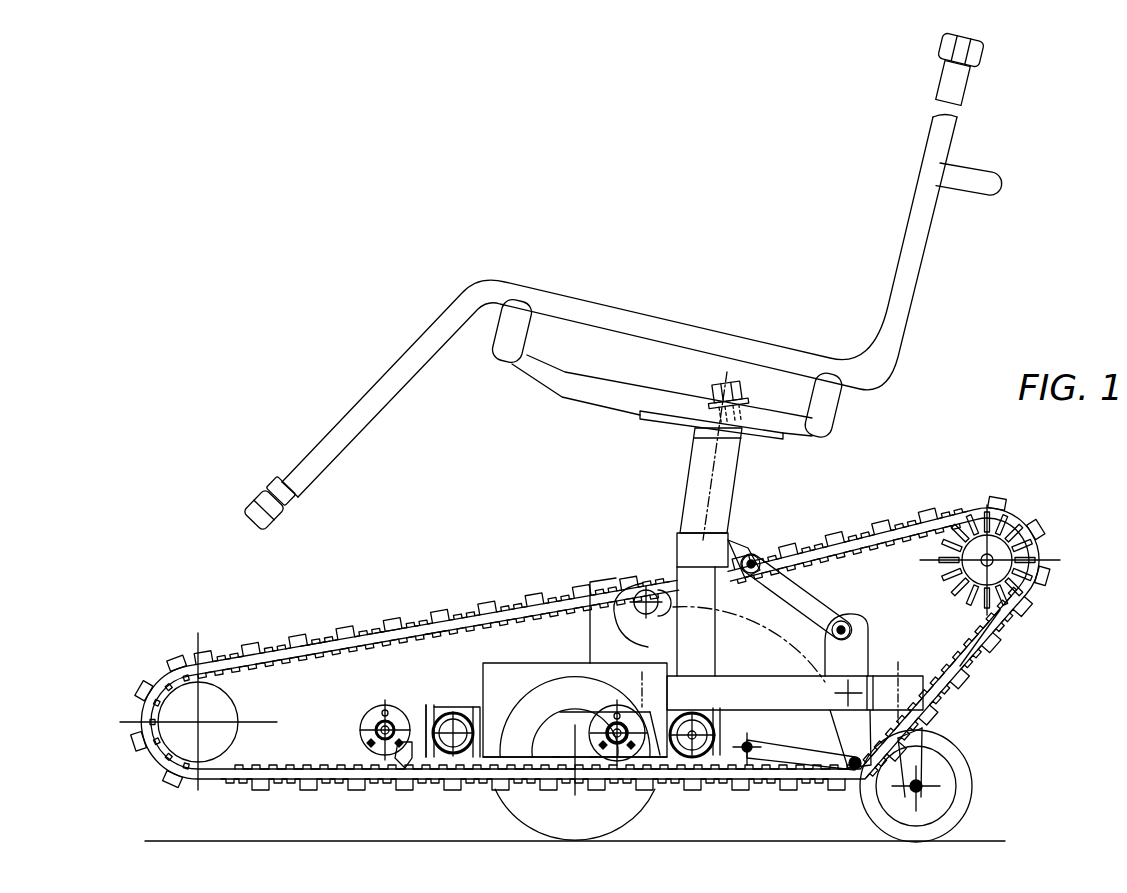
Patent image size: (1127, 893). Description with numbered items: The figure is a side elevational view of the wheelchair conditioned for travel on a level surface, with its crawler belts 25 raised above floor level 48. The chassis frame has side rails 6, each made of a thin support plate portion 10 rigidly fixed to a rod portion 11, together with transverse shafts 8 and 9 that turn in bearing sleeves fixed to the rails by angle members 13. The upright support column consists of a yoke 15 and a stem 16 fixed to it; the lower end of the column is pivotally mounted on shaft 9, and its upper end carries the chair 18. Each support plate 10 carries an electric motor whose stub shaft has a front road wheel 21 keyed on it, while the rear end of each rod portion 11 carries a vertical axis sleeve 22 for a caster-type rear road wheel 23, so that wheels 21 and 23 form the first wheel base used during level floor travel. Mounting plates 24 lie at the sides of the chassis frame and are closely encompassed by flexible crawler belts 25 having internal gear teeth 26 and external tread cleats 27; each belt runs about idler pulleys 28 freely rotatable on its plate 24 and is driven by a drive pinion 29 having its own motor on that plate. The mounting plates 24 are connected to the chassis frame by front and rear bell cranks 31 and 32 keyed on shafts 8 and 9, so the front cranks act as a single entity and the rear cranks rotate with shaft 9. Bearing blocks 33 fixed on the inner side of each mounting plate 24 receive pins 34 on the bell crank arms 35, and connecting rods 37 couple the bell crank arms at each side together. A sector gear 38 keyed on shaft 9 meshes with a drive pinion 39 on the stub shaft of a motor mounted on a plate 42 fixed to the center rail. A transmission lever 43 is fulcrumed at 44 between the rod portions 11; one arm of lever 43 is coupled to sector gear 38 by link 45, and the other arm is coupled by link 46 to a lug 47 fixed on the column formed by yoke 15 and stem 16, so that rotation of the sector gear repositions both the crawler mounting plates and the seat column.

The side rail 6 is at (749, 644).
The transverse shaft 8 is at (455, 770).
The transverse shaft 9 is at (697, 750).
The support plate portion 10 is at (505, 680).
The rod portion 11 is at (743, 700).
The angle member 13 is at (473, 707).
The yoke 15 is at (697, 628).
The stem 16 is at (707, 463).
The chair 18 is at (685, 335).
The front road wheel 21 is at (575, 759).
The vertical axis sleeve 22 is at (973, 670).
The rear road wheel 23 is at (960, 757).
The mounting plate 24 is at (590, 643).
The crawler belt 25 is at (387, 632).
The internal gear teeth 26 is at (433, 628).
The external tread cleats 27 is at (313, 643).
The idler pulley 28 is at (183, 702).
The drive pinion 29 is at (1027, 527).
The front bell crank 31 is at (417, 767).
The rear bell crank 32 is at (683, 745).
The bearing block 33 is at (603, 720).
The pin 34 is at (373, 753).
The bell crank arm 35 is at (420, 720).
The connecting rod 37 is at (517, 767).
The sector gear 38 is at (650, 650).
The drive pinion 39 is at (647, 593).
The plate 42 is at (735, 550).
The transmission lever 43 is at (853, 667).
The fulcrum 44 is at (845, 745).
The link 45 is at (797, 753).
The link 46 is at (780, 577).
The lug 47 is at (728, 532).
The floor level 48 is at (233, 838).